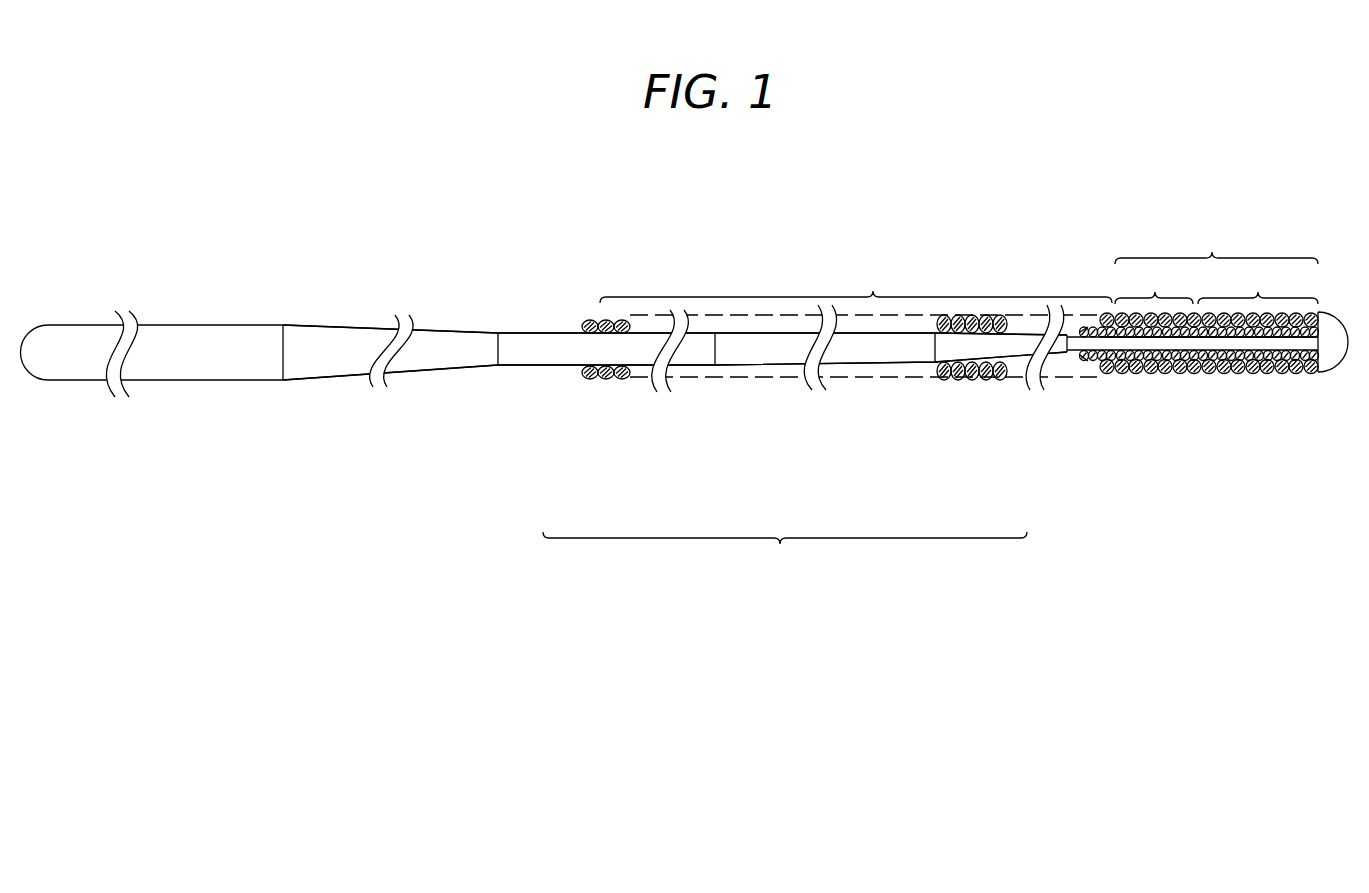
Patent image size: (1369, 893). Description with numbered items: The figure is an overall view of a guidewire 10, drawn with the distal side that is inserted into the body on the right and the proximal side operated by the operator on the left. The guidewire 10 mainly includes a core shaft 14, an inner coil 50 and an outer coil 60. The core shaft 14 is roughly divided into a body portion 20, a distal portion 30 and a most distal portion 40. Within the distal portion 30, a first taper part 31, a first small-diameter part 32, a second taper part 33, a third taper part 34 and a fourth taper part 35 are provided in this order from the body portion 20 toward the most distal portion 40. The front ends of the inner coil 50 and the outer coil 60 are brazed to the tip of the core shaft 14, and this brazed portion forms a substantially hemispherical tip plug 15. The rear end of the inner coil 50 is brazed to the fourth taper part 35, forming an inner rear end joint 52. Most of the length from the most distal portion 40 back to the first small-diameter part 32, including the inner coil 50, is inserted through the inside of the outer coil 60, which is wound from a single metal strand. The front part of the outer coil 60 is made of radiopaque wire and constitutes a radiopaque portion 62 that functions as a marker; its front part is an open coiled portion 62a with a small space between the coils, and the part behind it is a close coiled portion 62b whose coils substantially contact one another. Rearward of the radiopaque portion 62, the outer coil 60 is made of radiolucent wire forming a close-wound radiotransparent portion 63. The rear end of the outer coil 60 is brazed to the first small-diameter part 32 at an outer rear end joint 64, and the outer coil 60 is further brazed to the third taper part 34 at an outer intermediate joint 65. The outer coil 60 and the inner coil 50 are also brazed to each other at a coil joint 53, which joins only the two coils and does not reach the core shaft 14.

The guidewire 10 is at (834, 221).
The core shaft 14 is at (54, 346).
The tip plug 15 is at (1338, 352).
The body portion 20 is at (170, 357).
The distal portion 30 is at (785, 551).
The first taper part 31 is at (440, 348).
The first small-diameter part 32 is at (545, 352).
The second taper part 33 is at (758, 348).
The third taper part 34 is at (948, 345).
The fourth taper part 35 is at (1072, 342).
The most distal portion 40 is at (1287, 373).
The inner coil 50 is at (1220, 373).
The inner rear end joint 52 is at (1083, 357).
The coil joint 53 is at (1153, 367).
The outer coil 60 is at (992, 312).
The radiopaque portion 62 is at (1209, 300).
The open coiled portion 62a is at (1252, 320).
The close coiled portion 62b is at (1146, 320).
The radiotransparent portion 63 is at (856, 321).
The outer rear end joint 64 is at (586, 318).
The outer intermediate joint 65 is at (970, 380).